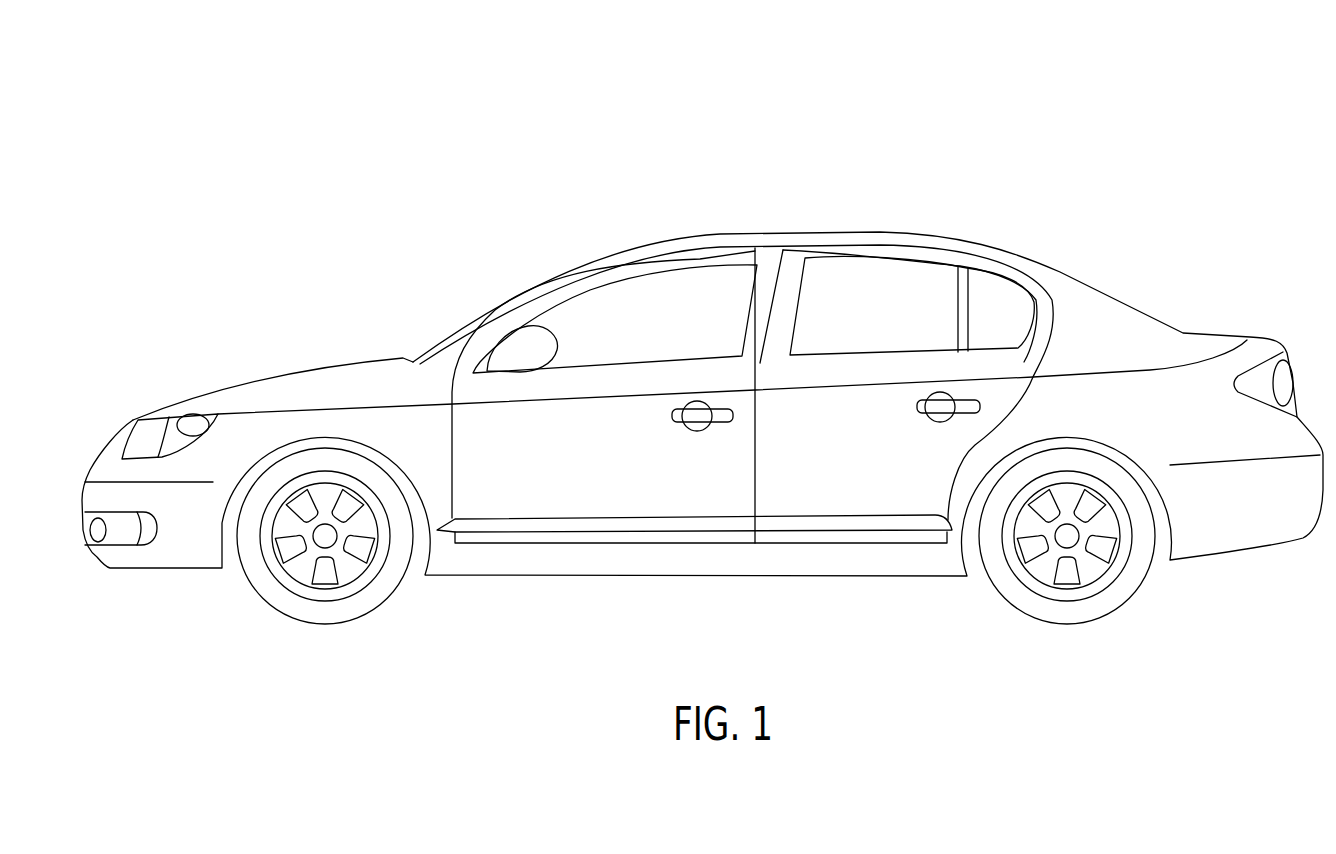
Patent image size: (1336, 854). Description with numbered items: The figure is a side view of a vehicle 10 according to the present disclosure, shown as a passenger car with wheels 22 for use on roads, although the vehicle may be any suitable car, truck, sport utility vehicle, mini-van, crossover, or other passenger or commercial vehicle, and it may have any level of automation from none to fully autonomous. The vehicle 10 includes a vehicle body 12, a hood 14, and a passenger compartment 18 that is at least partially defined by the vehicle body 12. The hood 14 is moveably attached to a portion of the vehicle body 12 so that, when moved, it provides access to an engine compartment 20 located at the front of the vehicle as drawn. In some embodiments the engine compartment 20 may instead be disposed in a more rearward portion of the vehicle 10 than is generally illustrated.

The vehicle 10 is at (398, 137).
The vehicle body 12 is at (422, 453).
The hood 14 is at (208, 350).
The passenger compartment 18 is at (638, 323).
The engine compartment 20 is at (368, 387).
The wheels 22 is at (1020, 517).